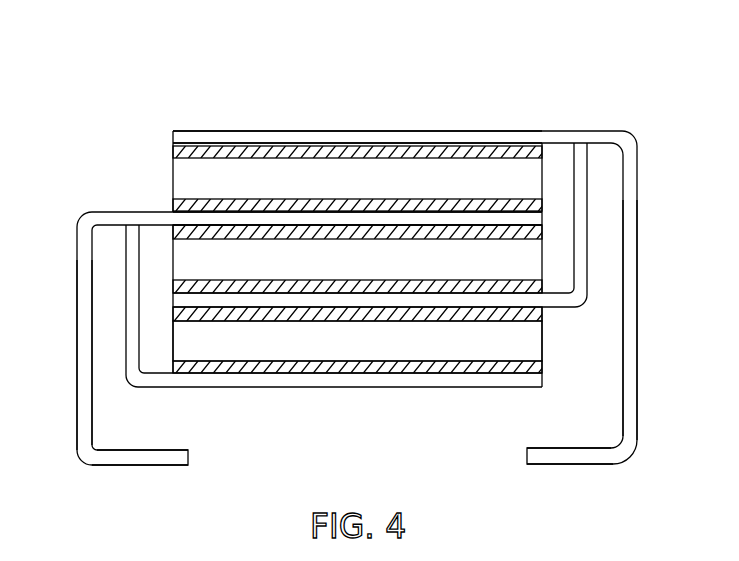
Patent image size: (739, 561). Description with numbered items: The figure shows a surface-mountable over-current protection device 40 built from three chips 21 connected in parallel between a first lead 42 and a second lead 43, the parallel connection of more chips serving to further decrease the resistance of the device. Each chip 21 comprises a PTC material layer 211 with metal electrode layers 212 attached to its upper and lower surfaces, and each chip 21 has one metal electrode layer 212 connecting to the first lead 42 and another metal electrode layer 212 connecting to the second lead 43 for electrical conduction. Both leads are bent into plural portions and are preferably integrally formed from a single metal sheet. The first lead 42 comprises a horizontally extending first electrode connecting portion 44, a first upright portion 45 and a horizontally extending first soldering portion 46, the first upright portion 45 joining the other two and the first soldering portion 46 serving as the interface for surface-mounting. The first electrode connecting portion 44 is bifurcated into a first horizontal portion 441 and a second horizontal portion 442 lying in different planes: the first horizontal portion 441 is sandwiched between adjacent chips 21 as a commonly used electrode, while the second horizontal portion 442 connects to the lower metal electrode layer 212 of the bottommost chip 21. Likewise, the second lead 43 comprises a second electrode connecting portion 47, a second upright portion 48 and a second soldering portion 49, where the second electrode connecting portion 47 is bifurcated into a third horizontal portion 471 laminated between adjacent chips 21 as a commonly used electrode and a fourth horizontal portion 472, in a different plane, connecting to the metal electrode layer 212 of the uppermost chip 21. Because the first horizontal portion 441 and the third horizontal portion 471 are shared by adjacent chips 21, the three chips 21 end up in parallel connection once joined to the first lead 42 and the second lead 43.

The surface-mountable over-current protection device 40 is at (644, 52).
The chip 21 is at (532, 178).
The PTC material layer 211 is at (251, 349).
The metal electrode layer 212 is at (347, 313).
The first lead 42 is at (82, 214).
The second lead 43 is at (632, 135).
The first electrode connecting portion 44 is at (203, 70).
The first horizontal portion 441 is at (275, 218).
The second horizontal portion 442 is at (220, 383).
The first upright portion 45 is at (78, 337).
The first soldering portion 46 is at (142, 465).
The second electrode connecting portion 47 is at (400, 70).
The third horizontal portion 471 is at (413, 300).
The fourth horizontal portion 472 is at (470, 131).
The second upright portion 48 is at (638, 392).
The second soldering portion 49 is at (568, 464).